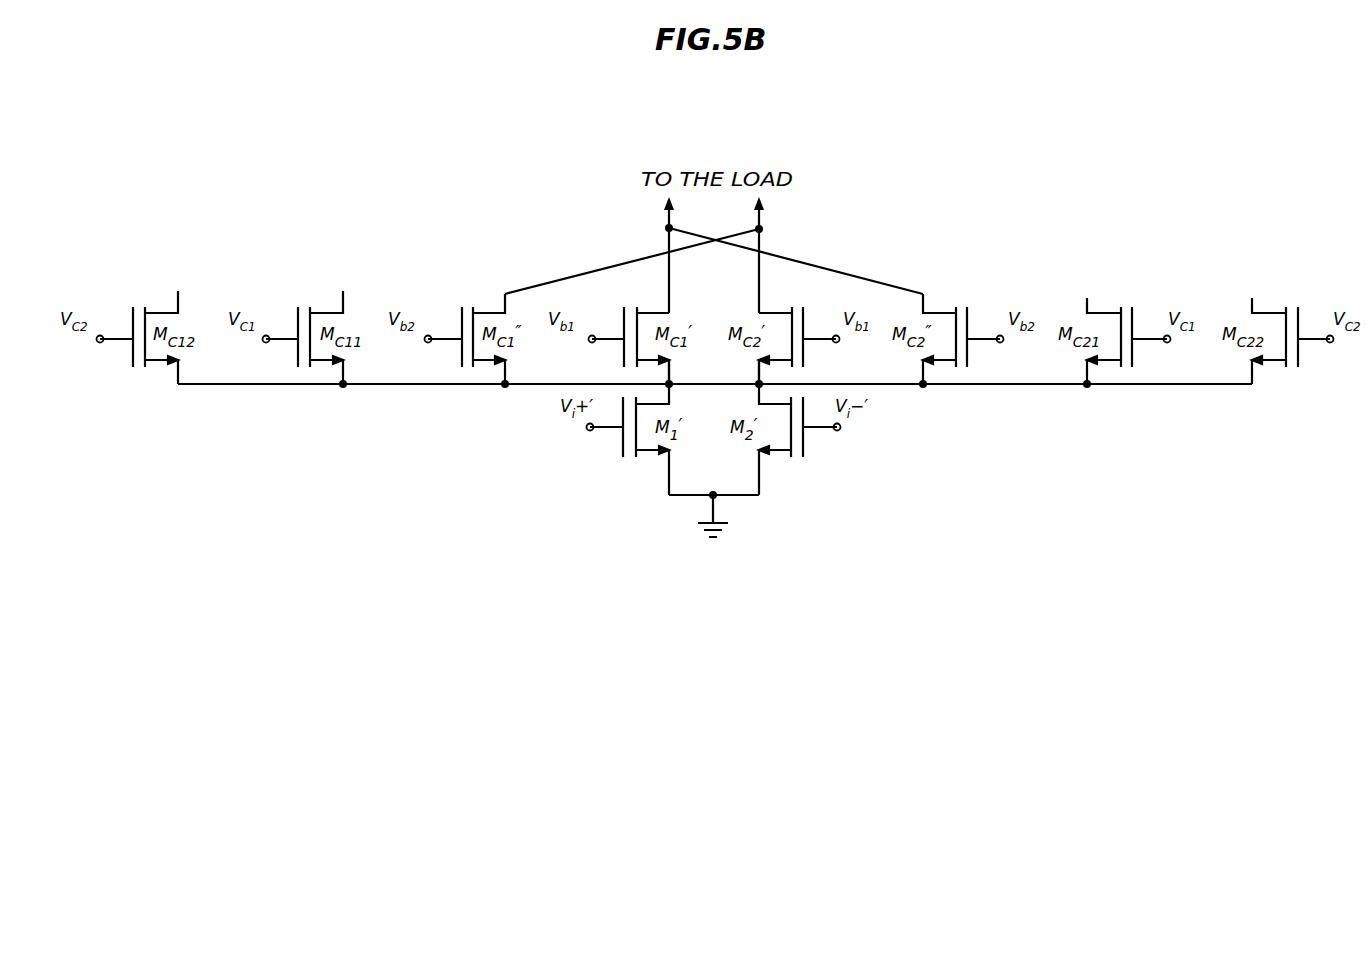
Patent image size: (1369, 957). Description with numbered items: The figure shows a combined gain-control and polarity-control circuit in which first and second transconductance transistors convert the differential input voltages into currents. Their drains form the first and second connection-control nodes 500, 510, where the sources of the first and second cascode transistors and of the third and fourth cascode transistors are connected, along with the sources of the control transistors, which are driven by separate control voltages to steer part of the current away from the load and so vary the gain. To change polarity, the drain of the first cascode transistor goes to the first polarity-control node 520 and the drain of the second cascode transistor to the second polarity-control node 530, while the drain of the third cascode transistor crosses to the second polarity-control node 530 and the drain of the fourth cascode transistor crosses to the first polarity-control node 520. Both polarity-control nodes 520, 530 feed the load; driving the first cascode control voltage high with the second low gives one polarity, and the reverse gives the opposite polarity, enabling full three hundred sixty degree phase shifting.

The first connection-control node 500 is at (669, 384).
The second connection-control node 510 is at (759, 384).
The first polarity-control node 520 is at (669, 228).
The second polarity-control node 530 is at (759, 229).